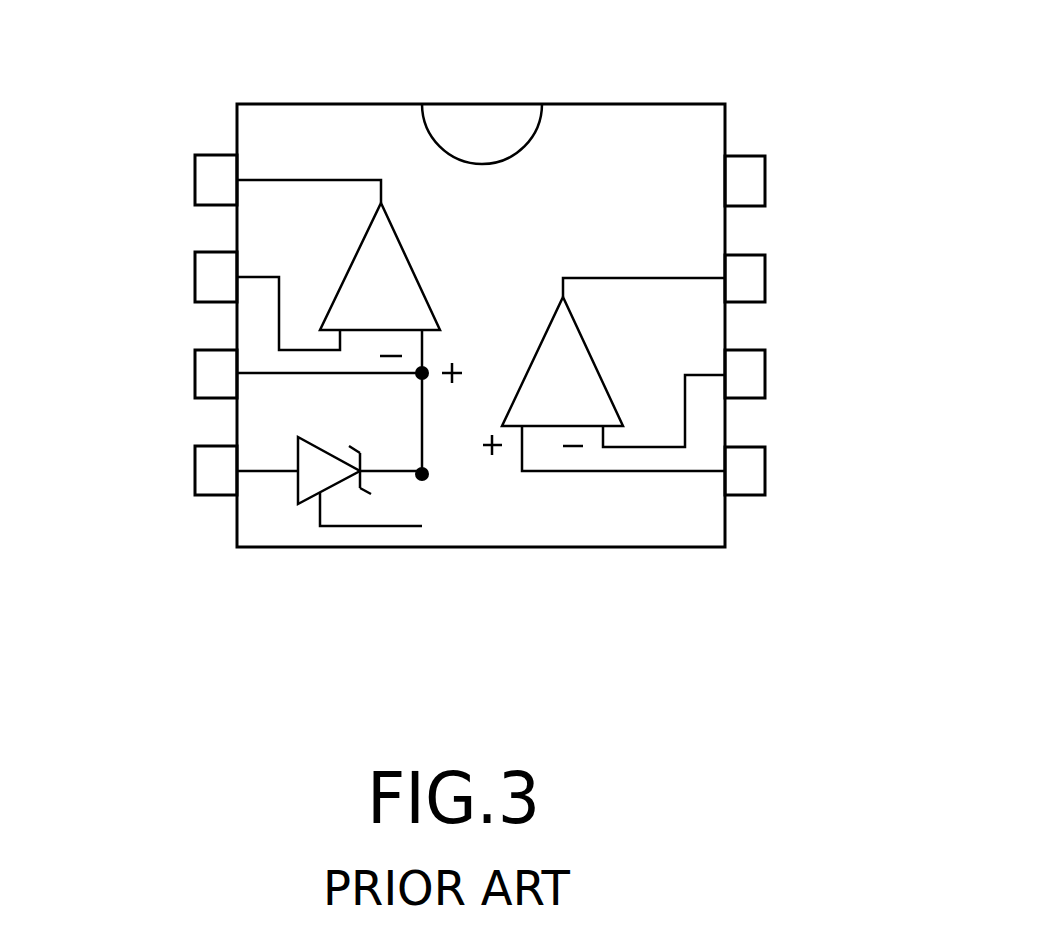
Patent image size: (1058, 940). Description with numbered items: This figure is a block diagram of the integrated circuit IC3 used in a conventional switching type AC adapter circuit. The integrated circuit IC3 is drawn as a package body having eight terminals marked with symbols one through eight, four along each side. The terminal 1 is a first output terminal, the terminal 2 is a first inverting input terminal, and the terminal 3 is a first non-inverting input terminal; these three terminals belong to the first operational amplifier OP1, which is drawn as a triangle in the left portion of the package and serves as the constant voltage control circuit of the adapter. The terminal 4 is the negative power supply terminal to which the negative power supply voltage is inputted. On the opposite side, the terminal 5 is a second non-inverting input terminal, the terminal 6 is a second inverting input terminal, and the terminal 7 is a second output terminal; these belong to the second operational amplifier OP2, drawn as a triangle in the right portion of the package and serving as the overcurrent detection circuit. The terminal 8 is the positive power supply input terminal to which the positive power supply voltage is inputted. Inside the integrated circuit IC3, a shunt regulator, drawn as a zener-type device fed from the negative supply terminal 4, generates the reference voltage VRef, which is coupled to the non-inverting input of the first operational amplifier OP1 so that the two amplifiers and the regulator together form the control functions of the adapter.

The integrated circuit IC3 is at (663, 104).
The first output terminal 1 is at (268, 180).
The first inverting input terminal 2 is at (247, 301).
The first non-inverting input terminal 3 is at (288, 374).
The negative power supply terminal 4 is at (105, 453).
The second non-inverting input terminal 5 is at (665, 460).
The second inverting input terminal 6 is at (705, 398).
The second output terminal 7 is at (685, 278).
The positive power supply input terminal 8 is at (805, 198).
The first operational amplifier OP1 is at (394, 334).
The second operational amplifier OP2 is at (553, 347).
The reference voltage VRef is at (407, 482).